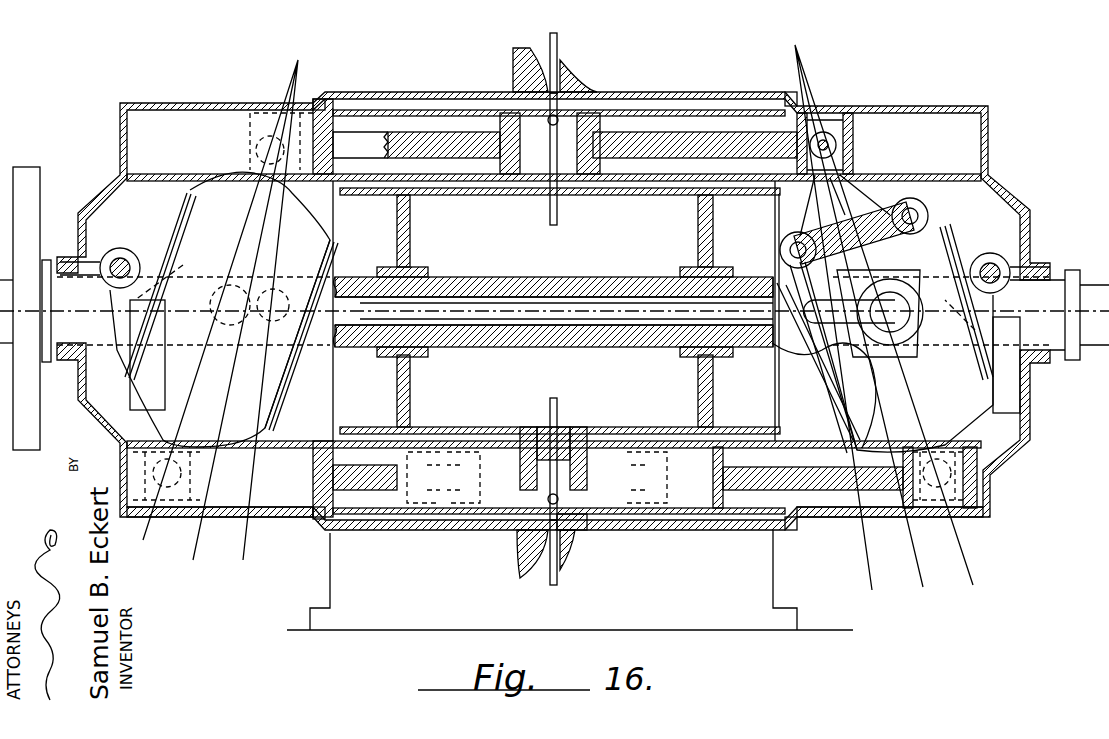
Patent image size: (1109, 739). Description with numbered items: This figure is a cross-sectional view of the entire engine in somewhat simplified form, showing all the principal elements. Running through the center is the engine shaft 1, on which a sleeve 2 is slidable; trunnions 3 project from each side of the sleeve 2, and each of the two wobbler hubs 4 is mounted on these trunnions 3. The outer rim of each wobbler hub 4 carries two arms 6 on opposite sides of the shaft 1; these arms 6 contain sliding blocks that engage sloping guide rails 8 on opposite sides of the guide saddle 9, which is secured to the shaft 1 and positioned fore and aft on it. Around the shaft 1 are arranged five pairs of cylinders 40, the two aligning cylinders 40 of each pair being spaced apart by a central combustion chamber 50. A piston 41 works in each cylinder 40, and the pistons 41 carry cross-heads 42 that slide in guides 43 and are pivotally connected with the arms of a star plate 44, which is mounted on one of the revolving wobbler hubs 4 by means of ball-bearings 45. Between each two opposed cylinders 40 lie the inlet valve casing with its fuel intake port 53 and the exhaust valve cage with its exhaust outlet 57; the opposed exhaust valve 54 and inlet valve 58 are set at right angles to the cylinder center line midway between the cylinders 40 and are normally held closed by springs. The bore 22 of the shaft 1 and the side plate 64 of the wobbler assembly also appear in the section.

The engine shaft 1 is at (638, 288).
The sleeve 2 is at (900, 275).
The trunnions 3 is at (900, 362).
The wobbler hub 4 is at (168, 220).
The arms 6 is at (115, 255).
The sloping guide rails 8 is at (975, 332).
The guide saddle 9 is at (110, 398).
The shaft bore 22 is at (590, 298).
The cylinders 40 is at (420, 532).
The piston 41 is at (345, 520).
The cross-heads 42 is at (833, 124).
The guides 43 is at (283, 518).
The star plate 44 is at (200, 200).
The ball-bearings 45 is at (920, 200).
The central combustion chamber 50 is at (577, 532).
The fuel intake port 53 is at (580, 100).
The exhaust valve 54 is at (558, 40).
The exhaust outlet 57 is at (515, 70).
The inlet valve 58 is at (550, 215).
The side plate 64 is at (330, 257).